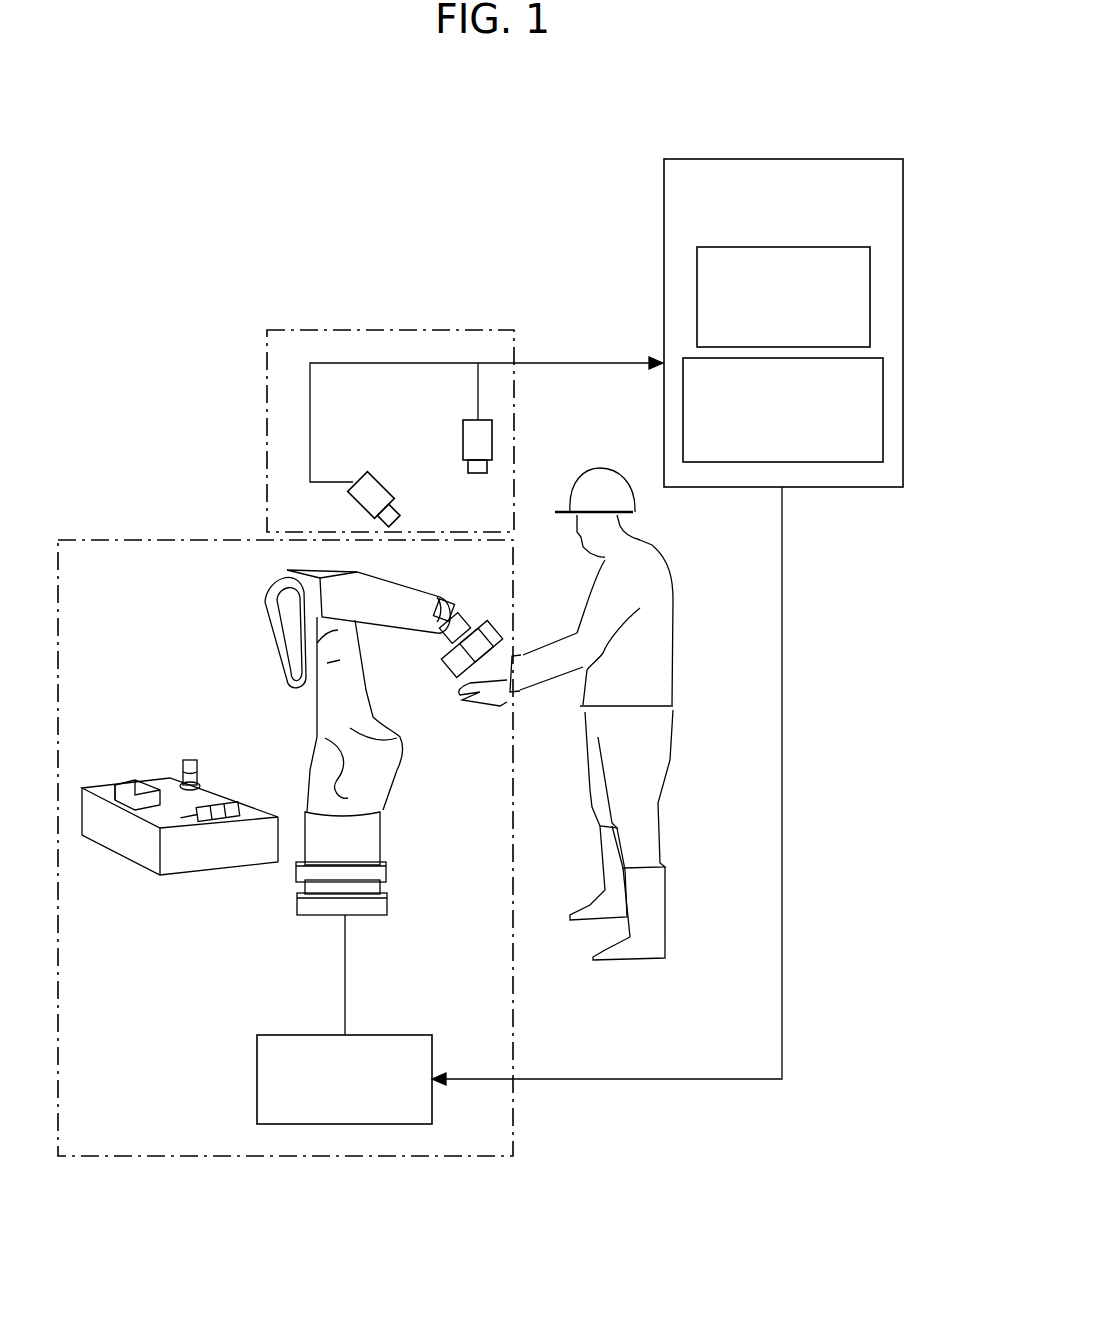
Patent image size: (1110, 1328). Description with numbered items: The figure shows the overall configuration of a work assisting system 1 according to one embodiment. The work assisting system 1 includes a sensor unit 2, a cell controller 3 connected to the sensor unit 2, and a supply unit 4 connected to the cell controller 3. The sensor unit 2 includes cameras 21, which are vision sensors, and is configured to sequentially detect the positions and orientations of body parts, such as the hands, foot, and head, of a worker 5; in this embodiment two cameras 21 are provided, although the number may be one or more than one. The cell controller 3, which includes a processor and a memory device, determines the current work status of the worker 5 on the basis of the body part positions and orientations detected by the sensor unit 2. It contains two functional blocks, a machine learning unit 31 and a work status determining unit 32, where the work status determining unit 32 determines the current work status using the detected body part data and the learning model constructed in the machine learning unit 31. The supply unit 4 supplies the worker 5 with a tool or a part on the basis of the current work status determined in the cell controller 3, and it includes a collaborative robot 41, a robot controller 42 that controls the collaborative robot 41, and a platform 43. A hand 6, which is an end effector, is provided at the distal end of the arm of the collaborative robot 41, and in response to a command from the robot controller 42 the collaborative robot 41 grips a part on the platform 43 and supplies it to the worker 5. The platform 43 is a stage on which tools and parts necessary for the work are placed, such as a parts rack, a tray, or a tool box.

The work assisting system 1 is at (896, 75).
The sensor unit 2 is at (373, 330).
The camera 21 is at (462, 432).
The cell controller 3 is at (786, 158).
The machine learning unit 31 is at (870, 312).
The work status determining unit 32 is at (883, 420).
The supply unit 4 is at (336, 1158).
The collaborative robot 41 is at (307, 713).
The robot controller 42 is at (298, 1035).
The platform 43 is at (158, 778).
The worker 5 is at (655, 607).
The hand 6 is at (447, 661).